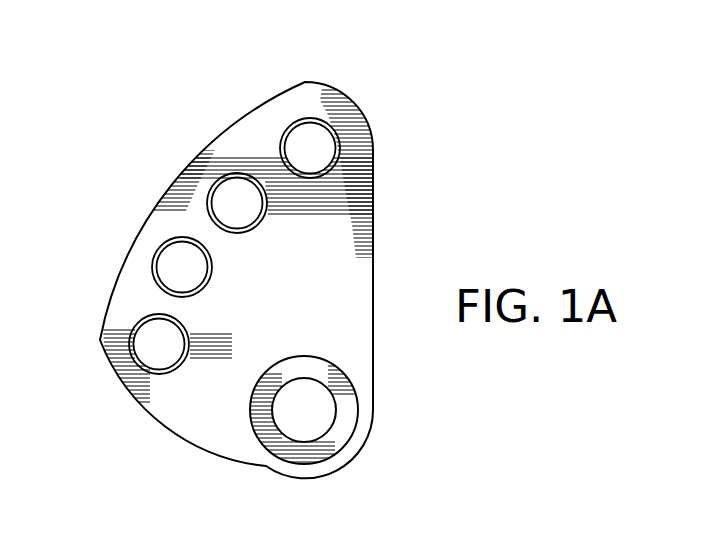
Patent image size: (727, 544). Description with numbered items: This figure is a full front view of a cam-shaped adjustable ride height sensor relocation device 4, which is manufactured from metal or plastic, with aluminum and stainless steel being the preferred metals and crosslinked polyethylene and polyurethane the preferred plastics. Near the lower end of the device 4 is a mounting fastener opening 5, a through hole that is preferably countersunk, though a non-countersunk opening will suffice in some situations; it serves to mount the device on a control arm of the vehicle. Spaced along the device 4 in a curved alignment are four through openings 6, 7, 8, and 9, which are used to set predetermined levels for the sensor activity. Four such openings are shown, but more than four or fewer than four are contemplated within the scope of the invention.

The adjustable ride height sensor relocation device 4 is at (410, 78).
The mounting fastener opening 5 is at (305, 413).
The through opening 6 is at (150, 341).
The through opening 7 is at (178, 268).
The through opening 8 is at (230, 193).
The through opening 9 is at (304, 128).